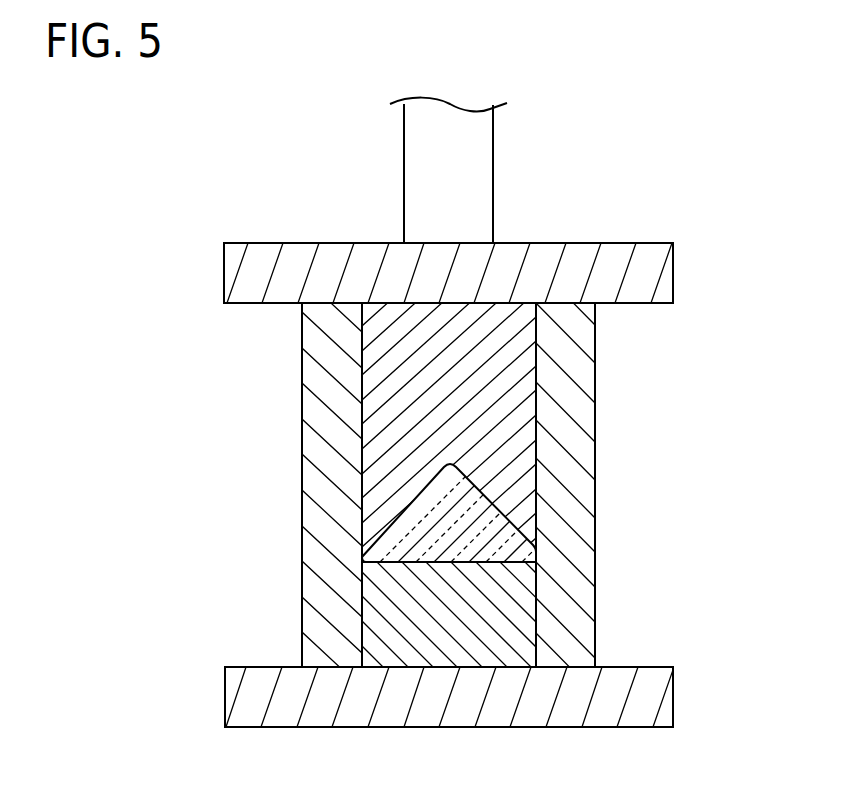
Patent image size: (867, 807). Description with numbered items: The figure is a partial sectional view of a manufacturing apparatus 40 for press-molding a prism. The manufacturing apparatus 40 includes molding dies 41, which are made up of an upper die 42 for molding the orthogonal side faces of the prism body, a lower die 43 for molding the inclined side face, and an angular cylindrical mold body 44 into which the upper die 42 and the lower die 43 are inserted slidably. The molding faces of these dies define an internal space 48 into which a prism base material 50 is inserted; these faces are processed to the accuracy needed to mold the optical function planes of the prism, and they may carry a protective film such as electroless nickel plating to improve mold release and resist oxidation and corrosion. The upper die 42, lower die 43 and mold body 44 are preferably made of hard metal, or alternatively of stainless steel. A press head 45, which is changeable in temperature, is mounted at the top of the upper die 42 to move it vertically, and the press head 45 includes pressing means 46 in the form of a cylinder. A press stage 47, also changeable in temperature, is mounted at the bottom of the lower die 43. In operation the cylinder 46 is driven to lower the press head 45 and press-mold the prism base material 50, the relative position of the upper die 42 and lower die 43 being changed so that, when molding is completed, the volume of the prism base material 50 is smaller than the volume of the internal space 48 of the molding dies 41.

The manufacturing apparatus 40 is at (684, 196).
The molding dies 41 is at (597, 421).
The upper die 42 is at (536, 352).
The lower die 43 is at (536, 622).
The mold body 44 is at (303, 472).
The press head 45 is at (673, 265).
The pressing means 46 is at (493, 167).
The press stage 47 is at (673, 693).
The internal space 48 is at (536, 558).
The prism base material 50 is at (492, 490).